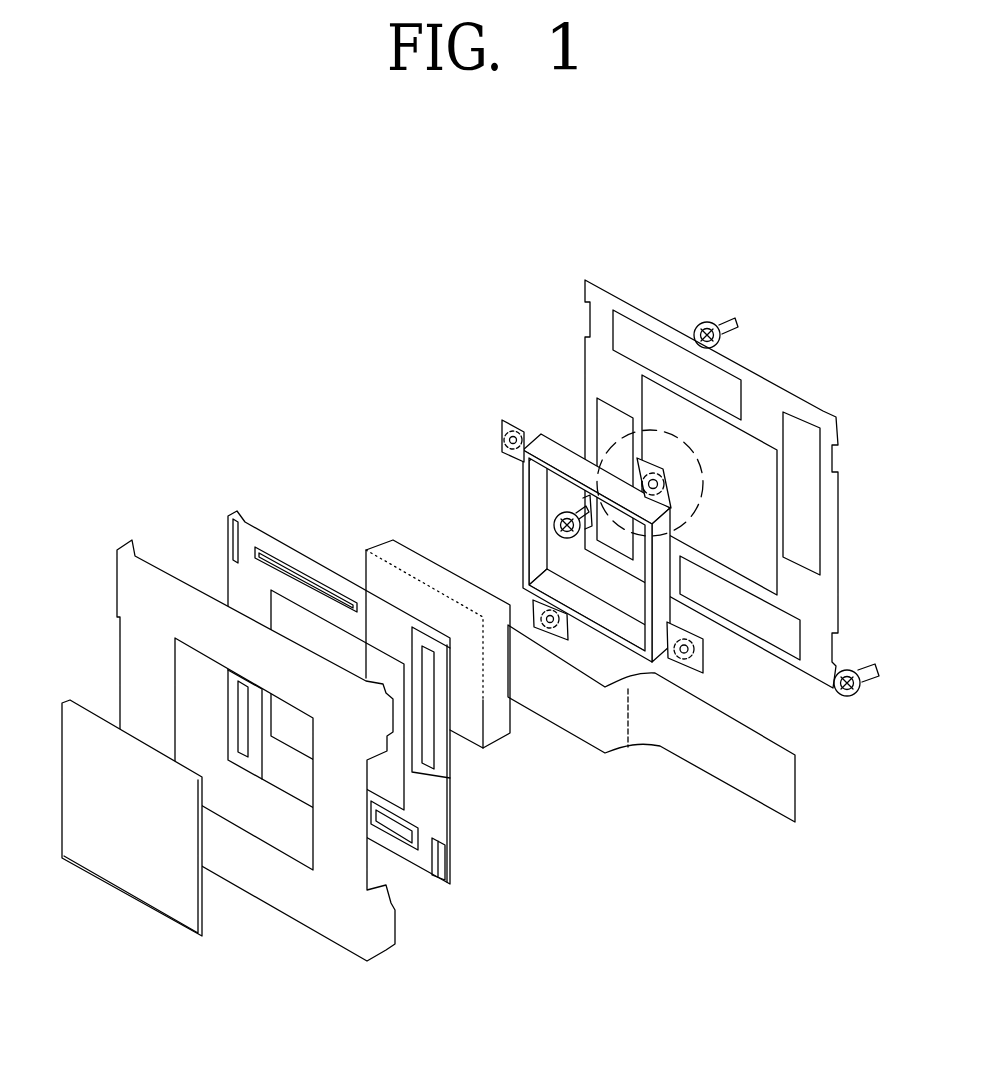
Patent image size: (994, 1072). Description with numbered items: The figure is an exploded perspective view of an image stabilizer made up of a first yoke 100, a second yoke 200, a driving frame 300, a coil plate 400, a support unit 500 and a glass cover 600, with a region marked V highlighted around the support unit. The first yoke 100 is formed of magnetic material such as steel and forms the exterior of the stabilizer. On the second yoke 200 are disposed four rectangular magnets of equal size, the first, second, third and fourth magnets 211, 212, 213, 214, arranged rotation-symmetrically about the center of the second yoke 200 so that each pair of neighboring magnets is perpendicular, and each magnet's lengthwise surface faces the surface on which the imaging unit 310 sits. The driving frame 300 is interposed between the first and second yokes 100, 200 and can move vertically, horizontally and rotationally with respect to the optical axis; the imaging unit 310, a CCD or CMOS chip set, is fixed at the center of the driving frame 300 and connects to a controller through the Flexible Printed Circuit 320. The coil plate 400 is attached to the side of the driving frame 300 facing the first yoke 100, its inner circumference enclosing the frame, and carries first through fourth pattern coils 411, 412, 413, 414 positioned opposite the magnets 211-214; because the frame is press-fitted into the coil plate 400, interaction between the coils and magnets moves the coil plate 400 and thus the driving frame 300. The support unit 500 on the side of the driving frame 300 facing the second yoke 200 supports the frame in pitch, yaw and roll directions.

The first yoke 100 is at (312, 903).
The second yoke 200 is at (813, 602).
The first magnet 211 is at (727, 387).
The second magnet 212 is at (803, 507).
The third magnet 213 is at (780, 628).
The fourth magnet 214 is at (608, 413).
The driving frame 300 is at (535, 500).
The imaging unit 310 is at (393, 550).
The Flexible Printed Circuit 320 is at (745, 775).
The coil plate 400 is at (430, 815).
The first pattern coil 411 is at (265, 545).
The second pattern coil 412 is at (445, 773).
The third pattern coil 413 is at (430, 860).
The fourth pattern coil 414 is at (232, 715).
The support unit 500 is at (655, 462).
The glass cover 600 is at (137, 877).
The region V is at (702, 464).